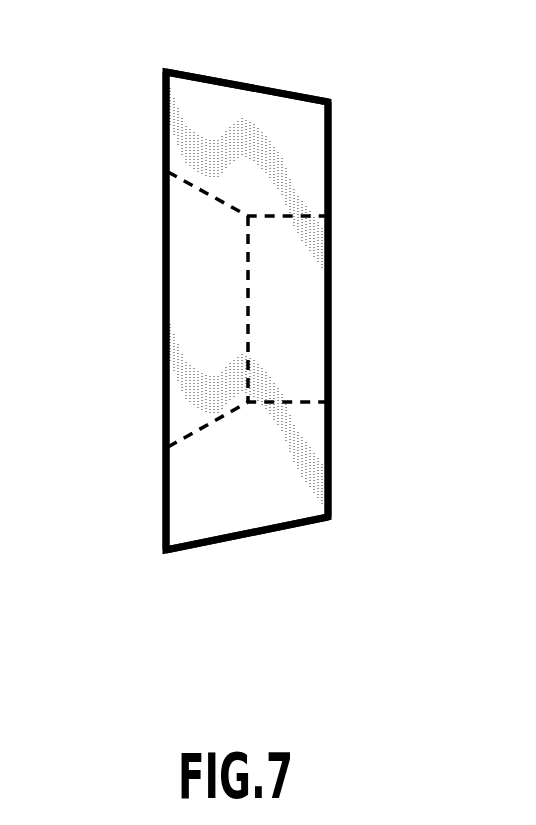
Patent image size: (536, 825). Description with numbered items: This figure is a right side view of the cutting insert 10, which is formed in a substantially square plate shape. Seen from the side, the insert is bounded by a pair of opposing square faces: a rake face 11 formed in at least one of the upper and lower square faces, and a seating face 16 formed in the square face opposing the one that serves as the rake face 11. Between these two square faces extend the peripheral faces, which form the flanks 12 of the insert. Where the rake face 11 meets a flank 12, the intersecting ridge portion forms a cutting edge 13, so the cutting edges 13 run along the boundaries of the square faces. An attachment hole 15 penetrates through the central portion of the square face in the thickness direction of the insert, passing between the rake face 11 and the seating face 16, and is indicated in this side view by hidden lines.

The cutting insert 10 is at (333, 85).
The rake face 11 is at (165, 125).
The flank 12 is at (210, 125).
The cutting edge 13 is at (163, 68).
The attachment hole 15 is at (200, 428).
The seating face 16 is at (331, 188).